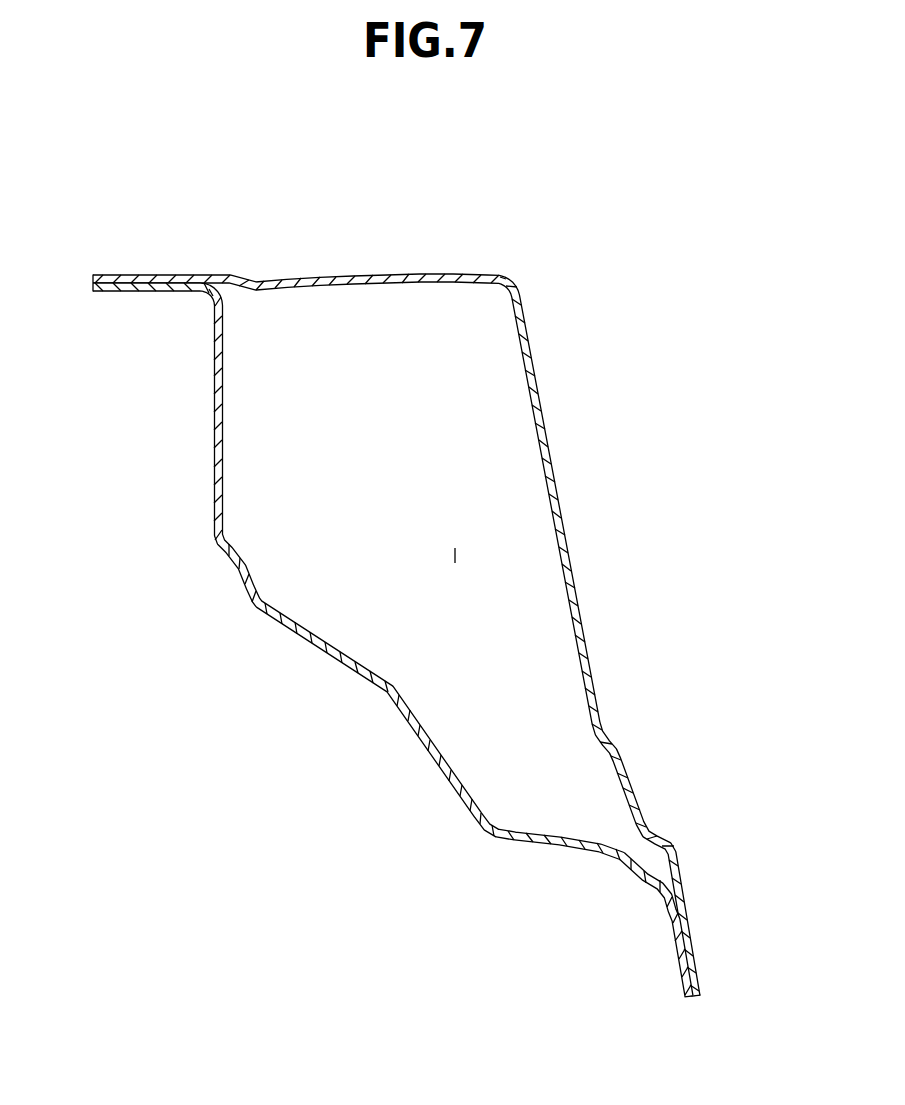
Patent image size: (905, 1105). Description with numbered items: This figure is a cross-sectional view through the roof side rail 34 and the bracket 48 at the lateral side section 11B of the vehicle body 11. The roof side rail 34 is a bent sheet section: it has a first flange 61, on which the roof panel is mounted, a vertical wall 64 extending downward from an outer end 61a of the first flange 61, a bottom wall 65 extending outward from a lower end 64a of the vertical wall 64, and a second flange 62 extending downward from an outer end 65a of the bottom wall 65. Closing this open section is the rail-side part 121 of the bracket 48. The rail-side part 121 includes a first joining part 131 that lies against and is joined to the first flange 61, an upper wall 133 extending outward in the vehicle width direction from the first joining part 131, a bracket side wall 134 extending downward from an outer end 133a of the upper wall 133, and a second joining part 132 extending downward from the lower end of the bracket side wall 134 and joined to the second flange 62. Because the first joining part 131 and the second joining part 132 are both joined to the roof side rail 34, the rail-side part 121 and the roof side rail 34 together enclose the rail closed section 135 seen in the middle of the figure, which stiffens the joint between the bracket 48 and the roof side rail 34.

The vehicle body 11 is at (131, 77).
The lateral side section 11B is at (153, 157).
The first joining part 131 is at (153, 275).
The upper wall 133 is at (364, 272).
The outer end 133a is at (500, 278).
The bracket side wall 134 is at (565, 438).
The rail closed section 135 is at (455, 556).
The second joining part 132 is at (688, 922).
The rail-side part 121 is at (584, 402).
The bracket 48 is at (601, 367).
The first flange 61 is at (136, 315).
The outer end 61a is at (197, 293).
The vertical wall 64 is at (196, 448).
The lower end 64a is at (253, 604).
The bottom wall 65 is at (388, 698).
The outer end 65a is at (640, 871).
The roof side rail 34 is at (279, 678).
The second flange 62 is at (677, 950).